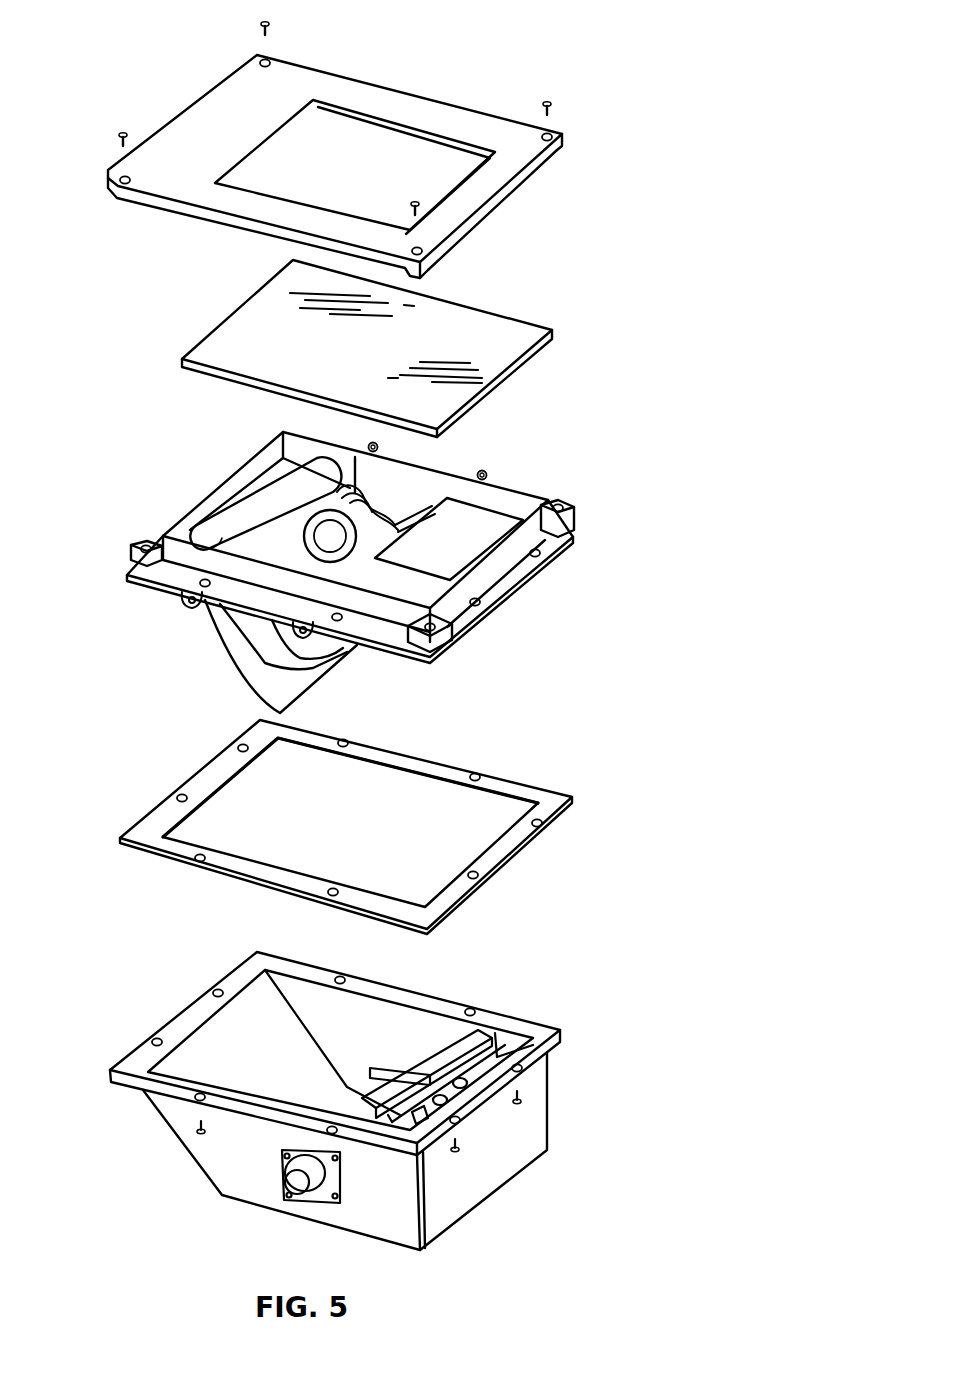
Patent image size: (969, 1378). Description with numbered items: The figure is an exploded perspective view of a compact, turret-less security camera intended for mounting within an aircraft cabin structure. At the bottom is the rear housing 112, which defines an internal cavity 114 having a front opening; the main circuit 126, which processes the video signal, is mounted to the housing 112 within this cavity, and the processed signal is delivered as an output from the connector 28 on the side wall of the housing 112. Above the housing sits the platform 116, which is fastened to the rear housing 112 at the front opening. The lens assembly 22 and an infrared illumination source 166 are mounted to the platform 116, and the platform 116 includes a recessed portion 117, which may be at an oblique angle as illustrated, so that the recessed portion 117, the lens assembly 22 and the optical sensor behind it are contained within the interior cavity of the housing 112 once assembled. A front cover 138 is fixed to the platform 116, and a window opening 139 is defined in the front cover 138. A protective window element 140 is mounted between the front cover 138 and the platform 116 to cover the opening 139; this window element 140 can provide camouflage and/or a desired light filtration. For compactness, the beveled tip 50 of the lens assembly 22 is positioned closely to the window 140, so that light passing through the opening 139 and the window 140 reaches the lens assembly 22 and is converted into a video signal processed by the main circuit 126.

The front cover 138 is at (361, 150).
The window opening 139 is at (418, 168).
The protective window element 140 is at (522, 343).
The platform 116 is at (420, 536).
The beveled tip 50 is at (330, 515).
The lens assembly 22 is at (320, 532).
The infrared illumination source 166 is at (383, 502).
The recessed portion 117 is at (263, 630).
The rear housing 112 is at (339, 1092).
The internal cavity 114 is at (373, 1042).
The main circuit 126 is at (448, 1033).
The connector 28 is at (313, 1193).